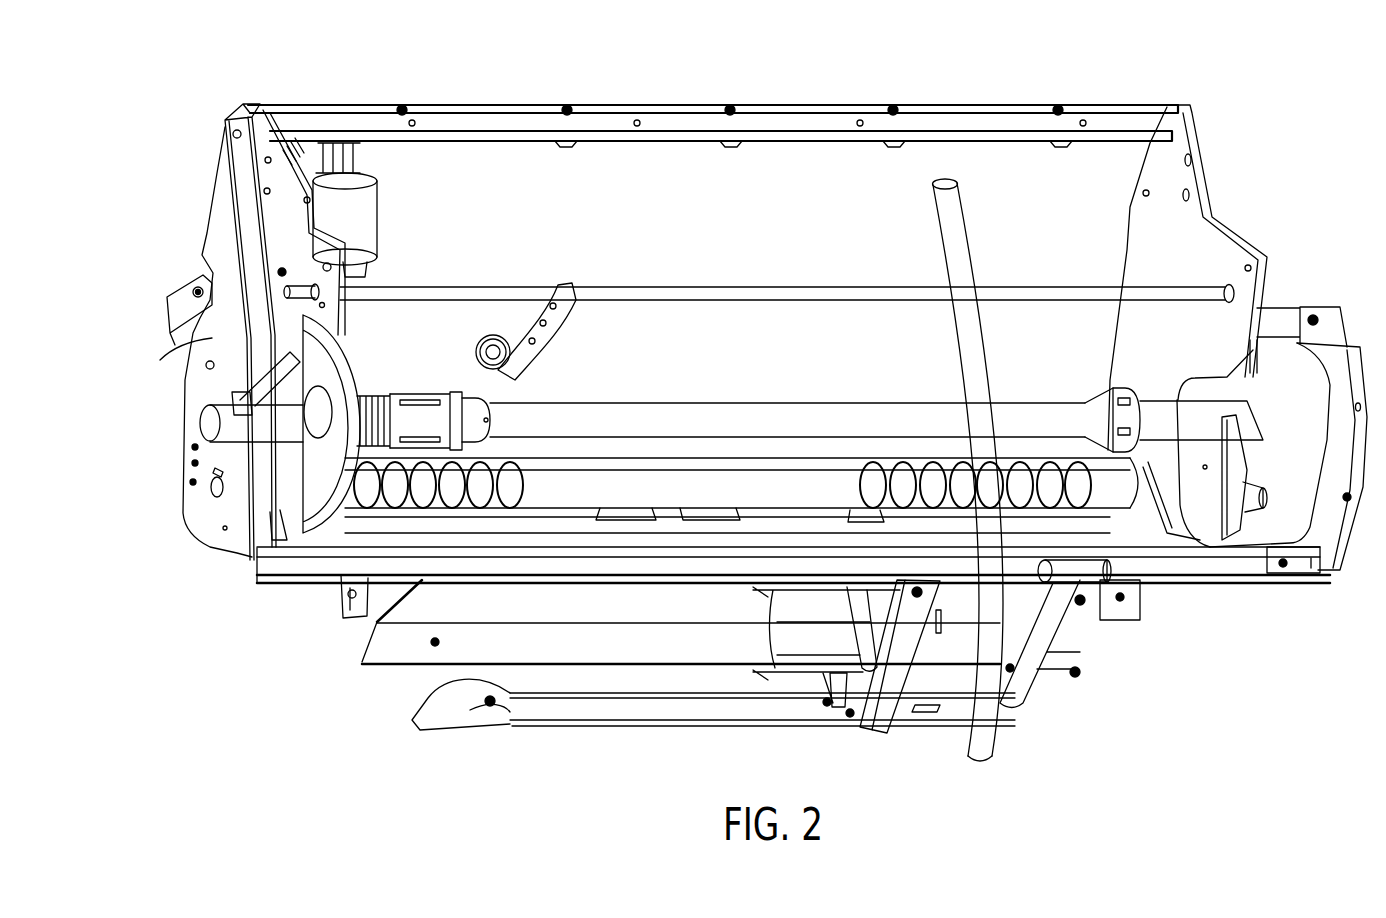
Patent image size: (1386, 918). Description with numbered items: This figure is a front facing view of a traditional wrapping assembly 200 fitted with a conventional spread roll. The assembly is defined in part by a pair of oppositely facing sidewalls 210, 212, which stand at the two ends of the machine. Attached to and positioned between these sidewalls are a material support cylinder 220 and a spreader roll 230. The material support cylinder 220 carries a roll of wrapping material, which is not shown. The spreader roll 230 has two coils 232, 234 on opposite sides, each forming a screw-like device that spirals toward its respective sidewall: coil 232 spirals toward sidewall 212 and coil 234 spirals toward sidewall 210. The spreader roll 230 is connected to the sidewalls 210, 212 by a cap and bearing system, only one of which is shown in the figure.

The wrapping assembly 200 is at (186, 104).
The sidewall 210 is at (205, 338).
The sidewall 212 is at (1213, 246).
The material support cylinder 220 is at (553, 422).
The spreader roll 230 is at (797, 482).
The coil 232 is at (1077, 456).
The coil 234 is at (447, 493).